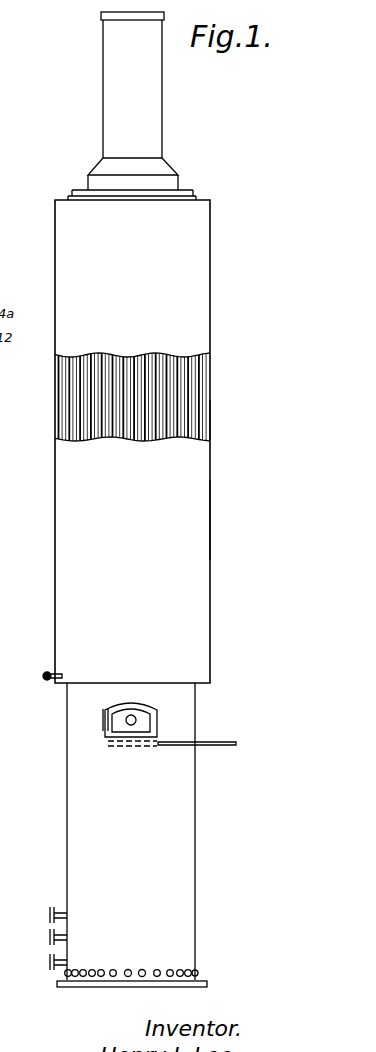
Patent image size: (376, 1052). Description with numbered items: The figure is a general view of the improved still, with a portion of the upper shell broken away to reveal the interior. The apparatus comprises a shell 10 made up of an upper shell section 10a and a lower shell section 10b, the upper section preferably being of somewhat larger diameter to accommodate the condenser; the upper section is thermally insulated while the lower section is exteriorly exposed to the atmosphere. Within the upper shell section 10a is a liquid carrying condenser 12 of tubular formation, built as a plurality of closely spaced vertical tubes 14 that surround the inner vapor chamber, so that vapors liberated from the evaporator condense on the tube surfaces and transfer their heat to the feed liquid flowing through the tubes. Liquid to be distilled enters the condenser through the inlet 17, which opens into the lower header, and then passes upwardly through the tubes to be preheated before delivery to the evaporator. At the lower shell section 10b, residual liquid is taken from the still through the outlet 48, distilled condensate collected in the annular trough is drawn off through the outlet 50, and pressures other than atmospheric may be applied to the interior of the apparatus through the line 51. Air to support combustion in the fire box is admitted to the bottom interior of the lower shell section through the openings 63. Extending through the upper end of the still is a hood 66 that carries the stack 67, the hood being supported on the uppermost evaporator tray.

The stack 67 is at (132, 85).
The hood 66 is at (170, 188).
The shell 10 is at (220, 627).
The upper shell section 10a is at (212, 531).
The lower shell section 10b is at (197, 857).
The vertical tubes 14 is at (110, 395).
The condenser 12 is at (213, 430).
The inlet 17 is at (53, 684).
The line 51 is at (60, 910).
The outlet 50 is at (52, 939).
The outlet 48 is at (60, 970).
The openings 63 is at (130, 969).